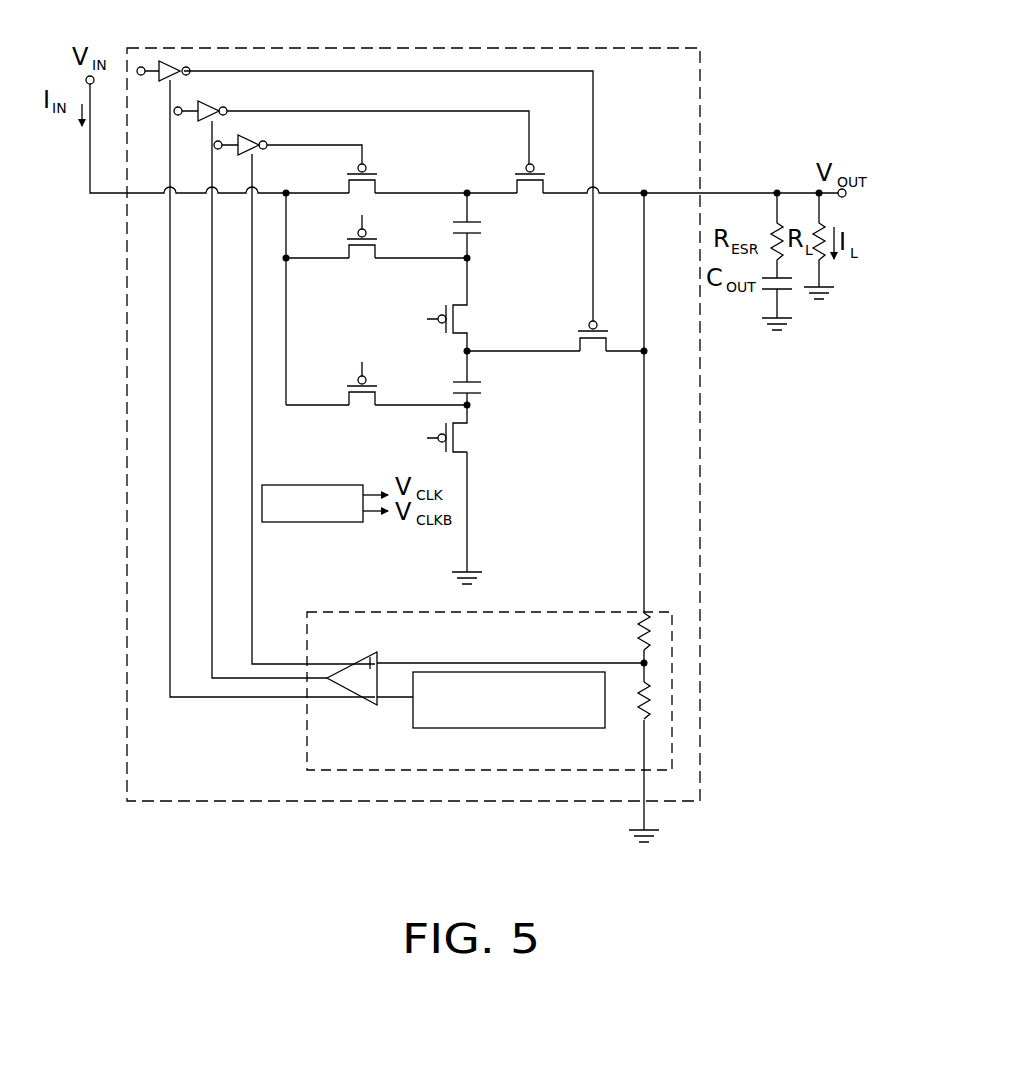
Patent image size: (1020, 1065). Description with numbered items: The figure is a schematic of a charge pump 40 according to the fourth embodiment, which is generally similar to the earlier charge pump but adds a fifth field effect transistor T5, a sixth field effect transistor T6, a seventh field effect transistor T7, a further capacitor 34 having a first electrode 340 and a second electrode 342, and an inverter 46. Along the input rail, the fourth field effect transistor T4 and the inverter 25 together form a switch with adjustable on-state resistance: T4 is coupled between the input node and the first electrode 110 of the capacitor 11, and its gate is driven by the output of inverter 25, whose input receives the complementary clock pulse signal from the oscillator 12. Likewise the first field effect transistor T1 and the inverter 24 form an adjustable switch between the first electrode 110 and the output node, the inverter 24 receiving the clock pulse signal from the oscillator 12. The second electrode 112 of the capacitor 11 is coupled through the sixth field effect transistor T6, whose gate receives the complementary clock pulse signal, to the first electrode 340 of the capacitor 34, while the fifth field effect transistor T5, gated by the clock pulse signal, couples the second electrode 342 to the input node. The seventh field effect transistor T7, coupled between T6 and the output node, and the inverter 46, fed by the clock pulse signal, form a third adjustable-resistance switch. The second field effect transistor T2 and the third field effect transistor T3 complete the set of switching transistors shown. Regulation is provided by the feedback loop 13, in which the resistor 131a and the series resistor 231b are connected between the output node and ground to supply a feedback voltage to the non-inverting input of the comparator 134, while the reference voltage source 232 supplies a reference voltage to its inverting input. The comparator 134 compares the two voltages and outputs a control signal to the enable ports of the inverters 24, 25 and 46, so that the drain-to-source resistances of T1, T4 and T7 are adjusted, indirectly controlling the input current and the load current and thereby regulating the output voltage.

The charge pump 40 is at (624, 66).
The inverter 46 is at (170, 61).
The inverter 24 is at (212, 108).
The inverter 25 is at (253, 144).
The first field effect transistor T1 is at (538, 167).
The second field effect transistor T2 is at (446, 433).
The third field effect transistor T3 is at (366, 231).
The fourth field effect transistor T4 is at (367, 166).
The fifth field effect transistor T5 is at (366, 377).
The sixth field effect transistor T6 is at (446, 305).
The seventh field effect transistor T7 is at (591, 322).
The capacitor 11 is at (519, 229).
The first electrode 110 is at (482, 222).
The second electrode 112 is at (482, 235).
The capacitor 34 is at (524, 388).
The first electrode 340 is at (482, 383).
The second electrode 342 is at (482, 395).
The oscillator 12 is at (303, 523).
The feedback loop 13 is at (490, 622).
The comparator 134 is at (361, 666).
The resistor 131a is at (641, 642).
The resistor 231b is at (637, 716).
The reference voltage source 232 is at (518, 720).